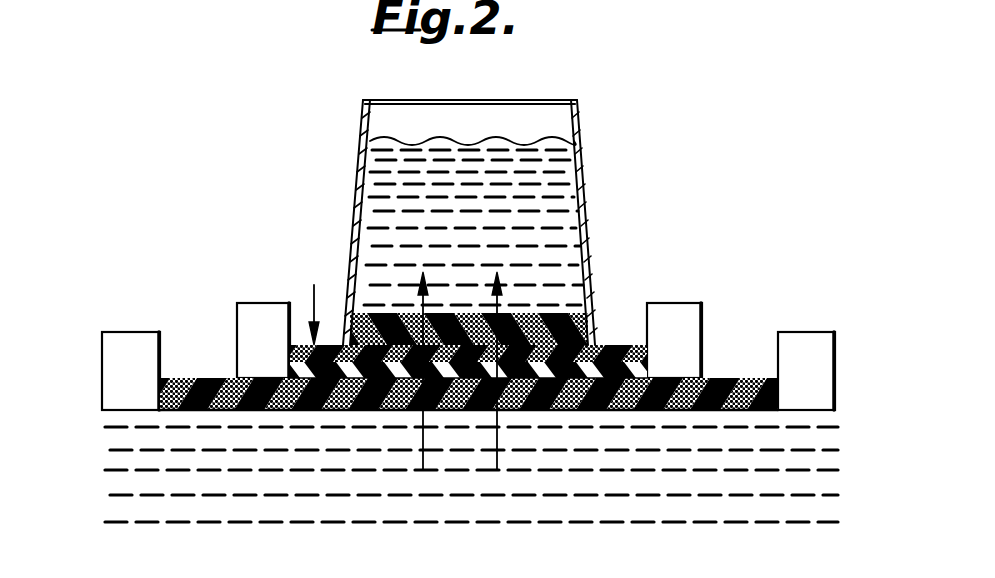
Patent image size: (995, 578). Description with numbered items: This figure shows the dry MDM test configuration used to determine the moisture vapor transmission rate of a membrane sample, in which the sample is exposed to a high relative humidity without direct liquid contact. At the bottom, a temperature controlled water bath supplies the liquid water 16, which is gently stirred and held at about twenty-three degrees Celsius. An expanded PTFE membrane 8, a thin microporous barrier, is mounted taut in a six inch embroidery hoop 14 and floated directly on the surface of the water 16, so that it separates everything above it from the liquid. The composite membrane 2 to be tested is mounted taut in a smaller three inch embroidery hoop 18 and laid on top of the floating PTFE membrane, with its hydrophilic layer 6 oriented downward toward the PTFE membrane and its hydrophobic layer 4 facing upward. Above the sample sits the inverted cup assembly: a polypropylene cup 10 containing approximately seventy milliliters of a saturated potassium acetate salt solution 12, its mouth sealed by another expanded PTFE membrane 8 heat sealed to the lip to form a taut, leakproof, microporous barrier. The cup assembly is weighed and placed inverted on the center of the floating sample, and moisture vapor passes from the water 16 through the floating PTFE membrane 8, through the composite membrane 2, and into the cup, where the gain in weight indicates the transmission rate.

The composite membrane 2 is at (314, 290).
The hydrophobic layer 4 is at (522, 410).
The hydrophilic layer 6 is at (600, 350).
The expanded PTFE membrane 8 is at (595, 300).
The polypropylene cup 10 is at (575, 155).
The saturated salt solution 12 is at (565, 202).
The six inch embroidery hoop 14 is at (127, 362).
The liquid water 16 is at (490, 506).
The three inch embroidery hoop 18 is at (258, 318).